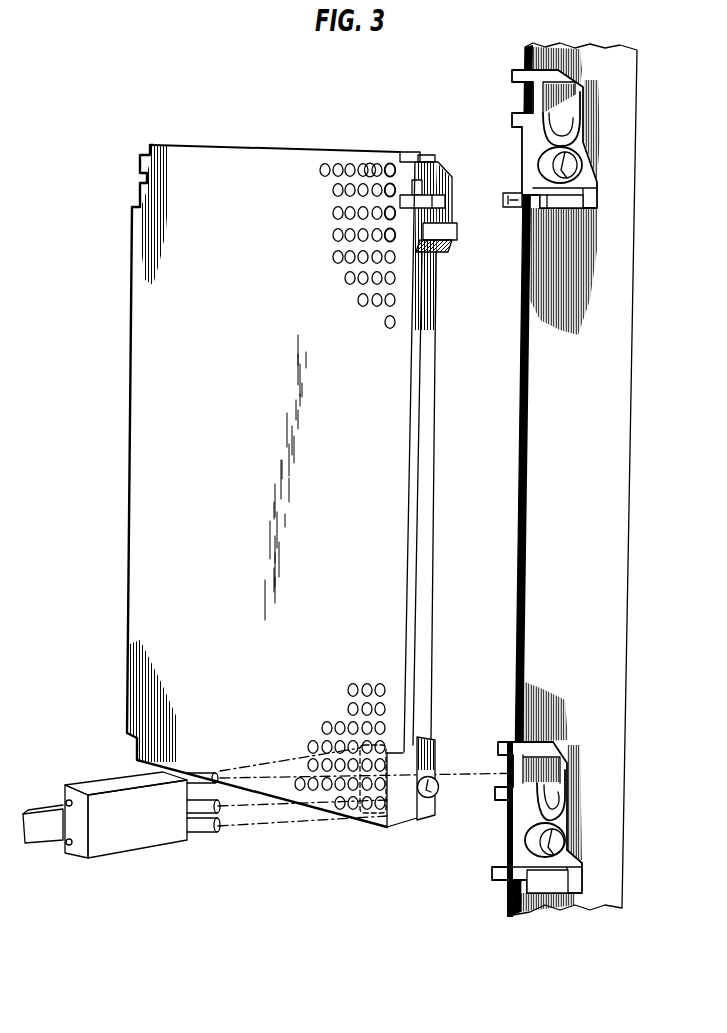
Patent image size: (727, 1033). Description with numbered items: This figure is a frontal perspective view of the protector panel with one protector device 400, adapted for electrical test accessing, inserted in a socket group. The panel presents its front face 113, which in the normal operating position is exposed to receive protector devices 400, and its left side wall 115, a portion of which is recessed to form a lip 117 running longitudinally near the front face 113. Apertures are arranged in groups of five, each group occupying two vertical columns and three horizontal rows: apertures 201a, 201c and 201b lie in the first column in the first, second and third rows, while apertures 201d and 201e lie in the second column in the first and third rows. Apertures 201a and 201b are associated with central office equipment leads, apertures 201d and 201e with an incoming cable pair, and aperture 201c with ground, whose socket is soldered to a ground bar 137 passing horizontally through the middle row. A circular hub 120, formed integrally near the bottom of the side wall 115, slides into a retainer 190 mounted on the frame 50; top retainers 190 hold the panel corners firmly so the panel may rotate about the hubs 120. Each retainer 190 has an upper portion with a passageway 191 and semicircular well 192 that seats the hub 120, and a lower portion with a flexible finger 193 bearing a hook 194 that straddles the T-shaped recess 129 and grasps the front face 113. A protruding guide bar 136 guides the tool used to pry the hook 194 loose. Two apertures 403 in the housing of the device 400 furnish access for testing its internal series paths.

The frame 50 is at (612, 432).
The front face 113 is at (402, 388).
The left side wall 115 is at (423, 527).
The lip 117 is at (410, 585).
The circular hub 120 is at (432, 797).
The T-shaped recess 129 is at (445, 204).
The guide bar 136 is at (457, 234).
The ground bar 137 is at (412, 155).
The retainer 190 is at (585, 153).
The passageway 191 is at (538, 103).
The semicircular well 192 is at (570, 131).
The flexible finger 193 is at (570, 210).
The hook 194 is at (508, 194).
The aperture 201a is at (389, 163).
The aperture 201b is at (388, 222).
The aperture 201c is at (387, 192).
The aperture 201d is at (369, 163).
The aperture 201e is at (386, 213).
The protector device 400 is at (130, 838).
The aperture 403 is at (67, 803).